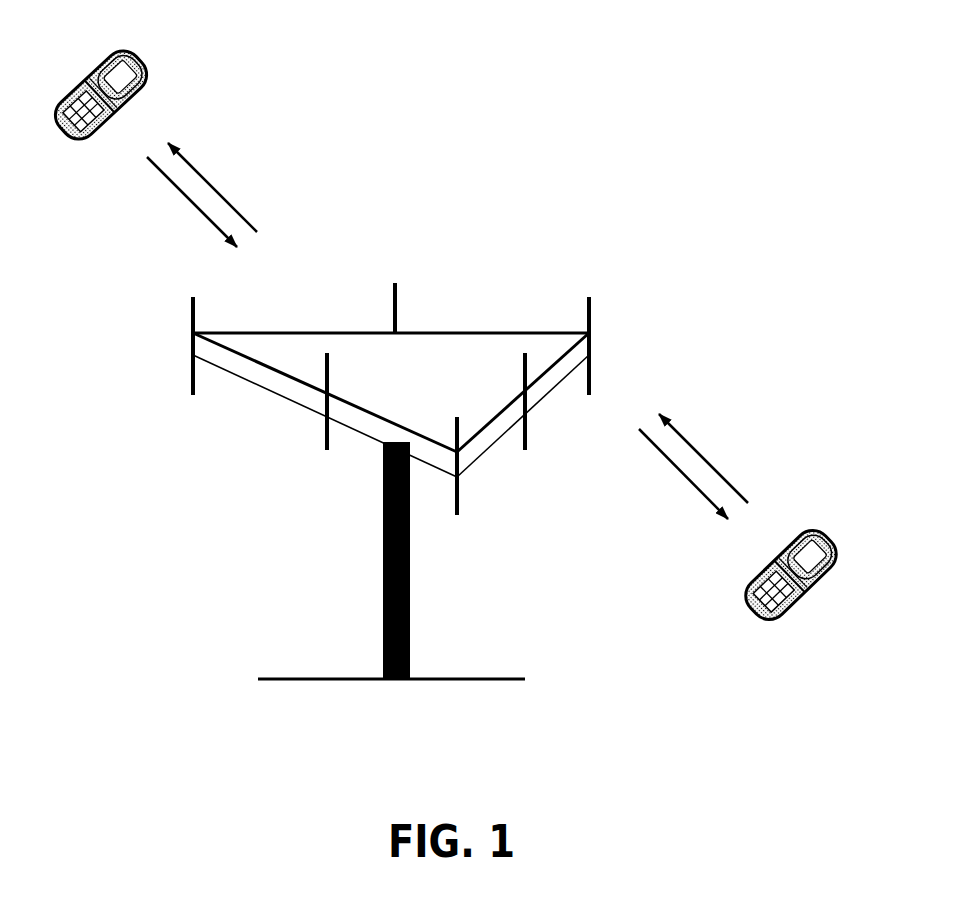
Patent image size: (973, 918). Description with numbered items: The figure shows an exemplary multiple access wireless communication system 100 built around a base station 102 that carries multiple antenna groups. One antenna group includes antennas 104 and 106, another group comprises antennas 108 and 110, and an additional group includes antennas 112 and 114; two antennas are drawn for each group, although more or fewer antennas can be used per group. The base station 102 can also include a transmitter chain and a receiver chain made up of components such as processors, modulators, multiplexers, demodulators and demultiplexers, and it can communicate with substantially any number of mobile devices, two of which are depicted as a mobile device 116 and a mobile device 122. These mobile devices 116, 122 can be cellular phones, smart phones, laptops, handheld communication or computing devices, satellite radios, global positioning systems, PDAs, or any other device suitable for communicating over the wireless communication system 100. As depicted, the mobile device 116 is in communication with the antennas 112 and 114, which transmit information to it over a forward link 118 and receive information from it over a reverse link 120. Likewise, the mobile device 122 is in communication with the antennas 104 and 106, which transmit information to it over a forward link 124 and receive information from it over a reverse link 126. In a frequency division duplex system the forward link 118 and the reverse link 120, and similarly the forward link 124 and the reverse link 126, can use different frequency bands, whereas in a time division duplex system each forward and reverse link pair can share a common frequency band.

The wireless communication system 100 is at (884, 117).
The base station 102 is at (410, 680).
The antenna 104 is at (589, 300).
The antenna 106 is at (525, 432).
The antenna 108 is at (457, 495).
The antenna 110 is at (327, 448).
The antenna 112 is at (193, 300).
The antenna 114 is at (395, 295).
The mobile device 116 is at (112, 52).
The forward link 118 is at (213, 187).
The reverse link 120 is at (203, 218).
The mobile device 122 is at (802, 528).
The forward link 124 is at (690, 485).
The reverse link 126 is at (698, 450).